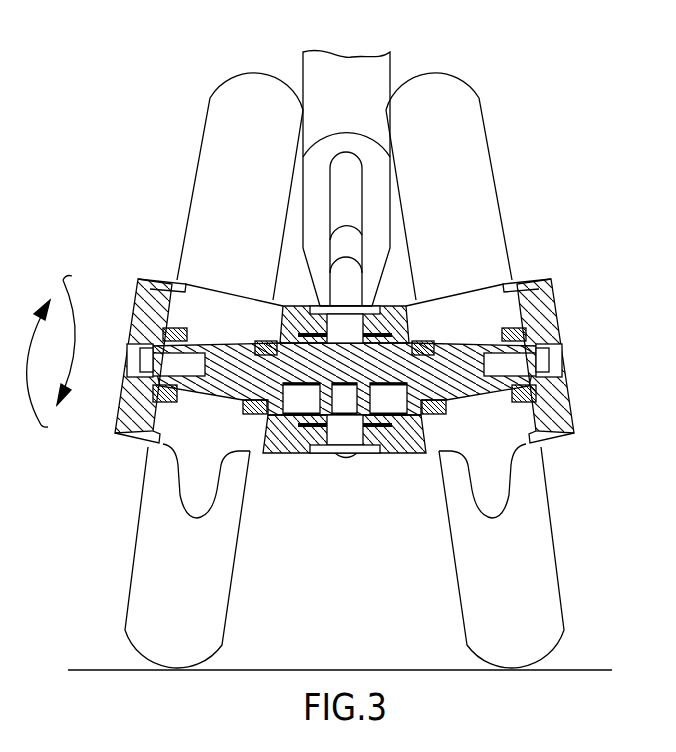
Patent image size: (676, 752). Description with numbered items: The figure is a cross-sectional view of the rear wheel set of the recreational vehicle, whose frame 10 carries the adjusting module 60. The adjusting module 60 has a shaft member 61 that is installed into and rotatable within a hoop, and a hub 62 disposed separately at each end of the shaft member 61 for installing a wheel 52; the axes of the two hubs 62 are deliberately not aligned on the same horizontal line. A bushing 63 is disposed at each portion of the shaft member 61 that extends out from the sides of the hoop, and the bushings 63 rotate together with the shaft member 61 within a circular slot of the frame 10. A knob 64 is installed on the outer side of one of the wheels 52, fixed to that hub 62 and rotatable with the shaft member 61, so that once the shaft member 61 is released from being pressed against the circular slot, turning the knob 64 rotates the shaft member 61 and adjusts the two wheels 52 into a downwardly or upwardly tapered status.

The frame 10 is at (352, 78).
The wheel 52 is at (153, 597).
The adjusting module 60 is at (323, 463).
The shaft member 61 is at (381, 455).
The hub 62 is at (223, 363).
The bushing 63 is at (272, 457).
The knob 64 is at (120, 410).